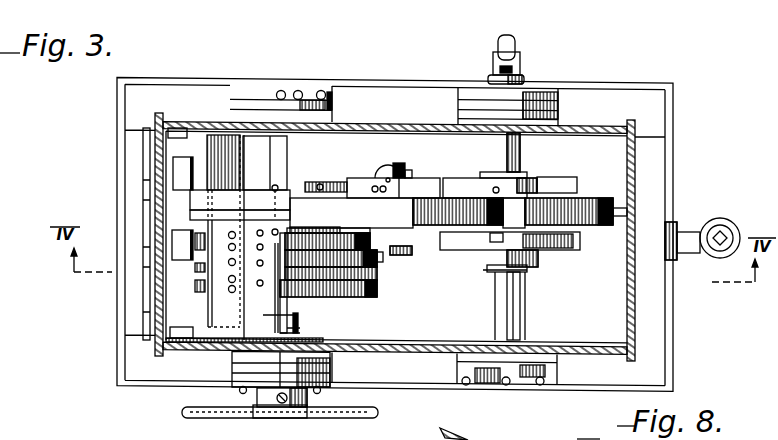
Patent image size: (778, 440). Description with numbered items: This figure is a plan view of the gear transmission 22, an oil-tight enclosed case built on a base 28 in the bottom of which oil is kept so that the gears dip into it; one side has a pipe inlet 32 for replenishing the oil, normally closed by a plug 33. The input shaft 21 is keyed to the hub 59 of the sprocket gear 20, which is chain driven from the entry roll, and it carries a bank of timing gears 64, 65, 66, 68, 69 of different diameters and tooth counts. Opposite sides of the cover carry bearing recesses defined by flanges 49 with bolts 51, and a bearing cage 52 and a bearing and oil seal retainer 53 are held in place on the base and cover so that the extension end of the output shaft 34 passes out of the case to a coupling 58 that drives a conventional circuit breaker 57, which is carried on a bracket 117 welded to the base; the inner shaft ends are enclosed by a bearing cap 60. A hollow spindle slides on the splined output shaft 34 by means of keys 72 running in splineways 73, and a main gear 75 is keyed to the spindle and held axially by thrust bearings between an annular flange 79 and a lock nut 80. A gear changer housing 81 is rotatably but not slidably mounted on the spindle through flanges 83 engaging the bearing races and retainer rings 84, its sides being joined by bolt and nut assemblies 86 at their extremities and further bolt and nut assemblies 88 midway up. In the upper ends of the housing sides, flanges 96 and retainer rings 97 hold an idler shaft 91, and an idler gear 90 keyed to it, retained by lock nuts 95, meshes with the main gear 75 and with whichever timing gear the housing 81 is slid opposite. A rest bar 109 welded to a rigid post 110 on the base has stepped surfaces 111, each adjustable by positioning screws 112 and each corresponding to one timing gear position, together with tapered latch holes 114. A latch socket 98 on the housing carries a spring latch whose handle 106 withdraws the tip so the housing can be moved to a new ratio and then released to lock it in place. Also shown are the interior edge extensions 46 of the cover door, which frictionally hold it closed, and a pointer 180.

In FIG. 3, the base 28 is at (190, 77).
In FIG. 3, the bearing cap 60 is at (270, 93).
In FIG. 3, the gear transmission 22 is at (377, 79).
In FIG. 3, the coupling 58 is at (497, 42).
In FIG. 3, the bracket 117 is at (524, 72).
In FIG. 3, the bearing and oil seal retainer 53 is at (560, 97).
In FIG. 3, the bearing cage 52 is at (559, 108).
In FIG. 3, the flanges 49 is at (462, 121).
In FIG. 3, the rigid post 110 is at (186, 128).
In FIG. 3, the handle 106 is at (175, 163).
In FIG. 3, the latch socket 98 is at (222, 216).
In FIG. 3, the tapered latch holes 114 is at (240, 205).
In FIG. 3, the interior edge extensions 46 is at (299, 131).
In FIG. 3, the timing gear 69 is at (324, 183).
In FIG. 3, the flanges 96 is at (356, 179).
In FIG. 3, the retainer rings 97 is at (388, 177).
In FIG. 3, the gear changer housing 81 is at (399, 163).
In FIG. 3, the idler shaft 91 is at (406, 170).
In FIG. 3, the idler gear 90 is at (432, 210).
In FIG. 3, the annular flange 79 is at (492, 172).
In FIG. 3, the bolt and nut assemblies 86 is at (492, 190).
In FIG. 3, the retainer rings 84 is at (547, 177).
In FIG. 3, the flanges 83 is at (560, 186).
In FIG. 3, the main gear 75 is at (578, 206).
In FIG. 3, the bolt and nut assemblies 88 is at (370, 198).
In FIG. 3, the timing gear 68 is at (337, 229).
In FIG. 3, the lock nuts 95 is at (412, 251).
In FIG. 3, the timing gear 66 is at (383, 262).
In FIG. 3, the timing gear 65 is at (378, 275).
In FIG. 3, the timing gear 64 is at (378, 293).
In FIG. 3, the stepped surfaces 111 is at (284, 275).
In FIG. 3, the rest bar 109 is at (298, 318).
In FIG. 3, the input shaft 21 is at (301, 333).
In FIG. 3, the keys 72 is at (500, 270).
In FIG. 3, the splineways 73 is at (507, 305).
In FIG. 3, the lock nut 80 is at (538, 257).
In FIG. 3, the output shaft 34 is at (522, 291).
In FIG. 3, the pipe inlet 32 is at (693, 231).
In FIG. 3, the plug 33 is at (733, 230).
In FIG. 3, the adjustable positioning screws 112 is at (265, 237).
In FIG. 3, the bolts 51 is at (238, 391).
In FIG. 3, the hub 59 is at (258, 398).
In FIG. 3, the sprocket gear 20 is at (353, 419).
In FIG. 8, the pointer 180 is at (440, 432).
In FIG. 8, the circuit breaker 57 is at (588, 430).